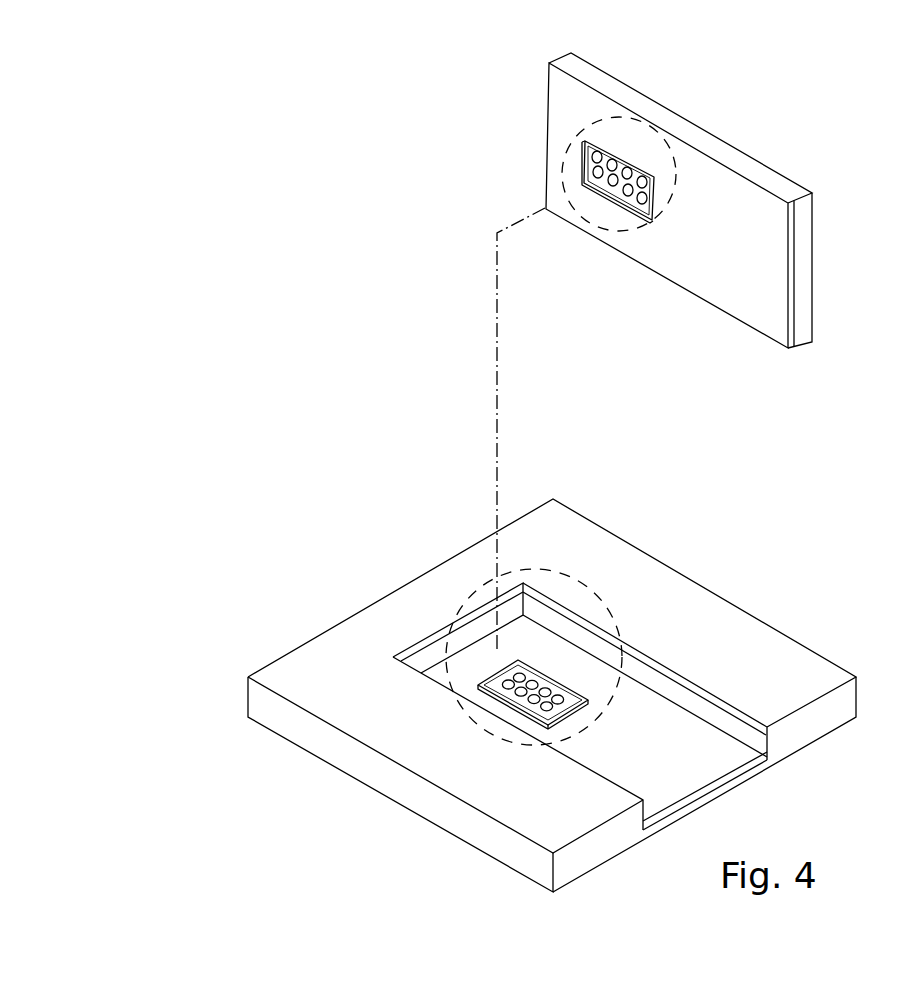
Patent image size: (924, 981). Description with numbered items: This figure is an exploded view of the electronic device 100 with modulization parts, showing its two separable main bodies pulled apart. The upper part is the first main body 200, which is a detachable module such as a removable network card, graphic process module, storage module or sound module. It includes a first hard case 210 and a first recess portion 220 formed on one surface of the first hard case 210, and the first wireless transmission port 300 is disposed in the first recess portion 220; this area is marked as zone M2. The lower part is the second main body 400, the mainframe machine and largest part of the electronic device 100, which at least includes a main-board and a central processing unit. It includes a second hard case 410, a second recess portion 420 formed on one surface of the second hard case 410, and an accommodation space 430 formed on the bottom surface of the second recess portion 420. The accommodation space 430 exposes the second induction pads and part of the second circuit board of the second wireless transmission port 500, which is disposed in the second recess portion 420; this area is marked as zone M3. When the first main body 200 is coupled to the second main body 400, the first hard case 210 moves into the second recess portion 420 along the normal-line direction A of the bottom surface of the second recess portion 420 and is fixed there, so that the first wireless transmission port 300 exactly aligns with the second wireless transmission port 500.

The electronic device 100 is at (93, 63).
The first main body 200 is at (417, 40).
The first hard case 210 is at (567, 66).
The first recess portion 220 is at (586, 152).
The first wireless transmission port 300 is at (620, 163).
The second main body 400 is at (380, 452).
The second hard case 410 is at (312, 655).
The second recess portion 420 is at (413, 657).
The accommodation space 430 is at (494, 668).
The second wireless transmission port 500 is at (515, 703).
The normal-line direction A is at (497, 394).
The zone M2 is at (665, 145).
The zone M3 is at (594, 584).